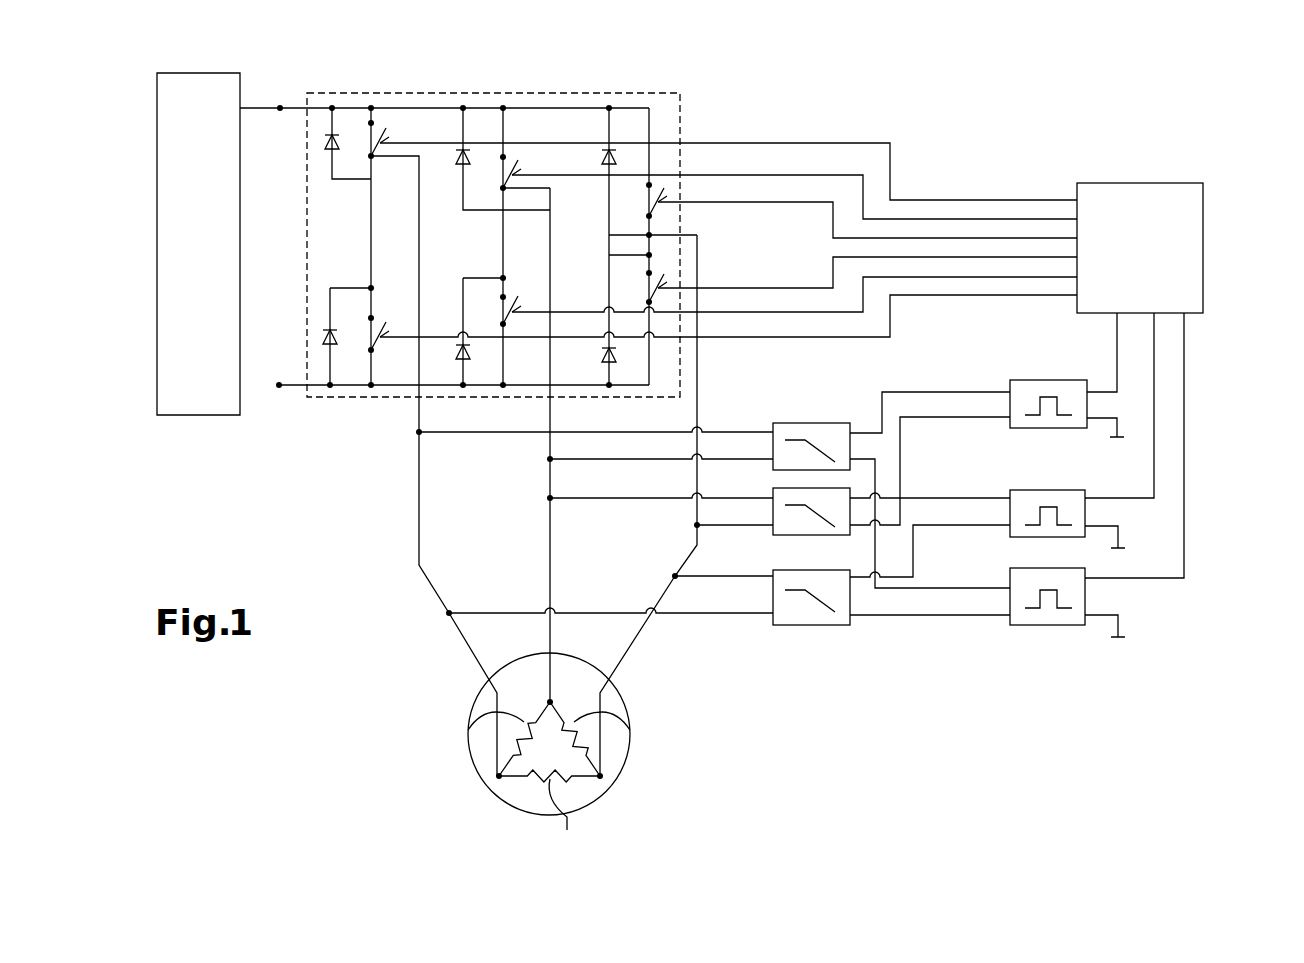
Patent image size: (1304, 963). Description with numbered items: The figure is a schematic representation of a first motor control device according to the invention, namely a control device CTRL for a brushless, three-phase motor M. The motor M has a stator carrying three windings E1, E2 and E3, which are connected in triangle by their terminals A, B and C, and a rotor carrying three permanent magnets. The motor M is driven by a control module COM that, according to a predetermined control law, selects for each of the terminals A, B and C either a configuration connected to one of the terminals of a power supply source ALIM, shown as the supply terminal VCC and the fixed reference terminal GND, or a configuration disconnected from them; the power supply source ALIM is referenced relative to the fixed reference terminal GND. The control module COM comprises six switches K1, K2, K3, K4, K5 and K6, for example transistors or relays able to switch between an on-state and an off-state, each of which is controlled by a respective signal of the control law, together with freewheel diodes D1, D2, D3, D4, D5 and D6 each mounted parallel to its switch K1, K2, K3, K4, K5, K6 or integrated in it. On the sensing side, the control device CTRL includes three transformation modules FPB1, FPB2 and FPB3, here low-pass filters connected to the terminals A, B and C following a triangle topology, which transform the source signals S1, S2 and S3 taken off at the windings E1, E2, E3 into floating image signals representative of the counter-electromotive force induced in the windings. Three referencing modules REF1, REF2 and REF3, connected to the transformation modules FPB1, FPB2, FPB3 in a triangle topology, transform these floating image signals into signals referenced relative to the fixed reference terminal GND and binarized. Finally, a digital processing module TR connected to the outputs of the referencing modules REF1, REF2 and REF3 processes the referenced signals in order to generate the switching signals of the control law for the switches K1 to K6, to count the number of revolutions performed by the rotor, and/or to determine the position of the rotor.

The power supply source ALIM is at (196, 72).
The supply voltage line VCC is at (280, 106).
The control module COM is at (644, 82).
The control device CTRL is at (845, 88).
The fixed reference terminal GND is at (279, 390).
The freewheel diode D1 is at (330, 162).
The freewheel diode D2 is at (456, 170).
The freewheel diode D3 is at (600, 152).
The freewheel diode D4 is at (322, 335).
The freewheel diode D5 is at (458, 350).
The freewheel diode D6 is at (612, 372).
The switch K1 is at (386, 140).
The switch K2 is at (520, 178).
The switch K3 is at (670, 196).
The switch K4 is at (384, 332).
The switch K5 is at (515, 302).
The switch K6 is at (670, 283).
The terminal A is at (572, 466).
The terminal B is at (650, 445).
The terminal C is at (611, 505).
The source signal S1 is at (748, 440).
The source signal S2 is at (748, 507).
The source signal S3 is at (752, 568).
The transformation module FPB1 is at (795, 420).
The transformation module FPB2 is at (830, 536).
The transformation module FPB3 is at (820, 627).
The referencing module REF1 is at (1028, 380).
The referencing module REF2 is at (1045, 490).
The referencing module REF3 is at (1060, 627).
The digital processing module TR is at (1140, 248).
The motor M is at (617, 799).
The winding E1 is at (470, 730).
The winding E2 is at (565, 821).
The winding E3 is at (630, 730).